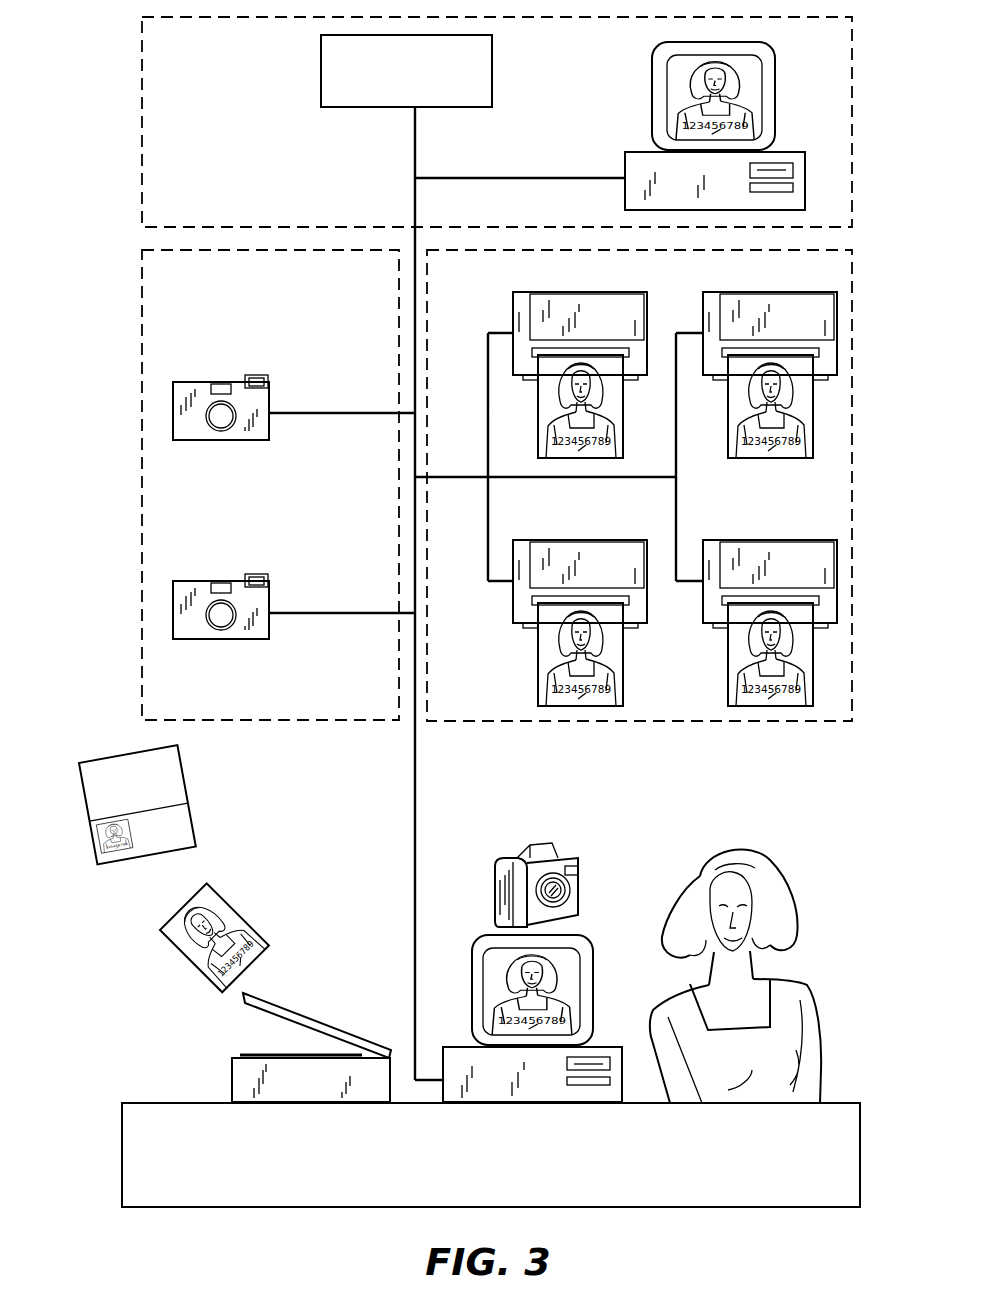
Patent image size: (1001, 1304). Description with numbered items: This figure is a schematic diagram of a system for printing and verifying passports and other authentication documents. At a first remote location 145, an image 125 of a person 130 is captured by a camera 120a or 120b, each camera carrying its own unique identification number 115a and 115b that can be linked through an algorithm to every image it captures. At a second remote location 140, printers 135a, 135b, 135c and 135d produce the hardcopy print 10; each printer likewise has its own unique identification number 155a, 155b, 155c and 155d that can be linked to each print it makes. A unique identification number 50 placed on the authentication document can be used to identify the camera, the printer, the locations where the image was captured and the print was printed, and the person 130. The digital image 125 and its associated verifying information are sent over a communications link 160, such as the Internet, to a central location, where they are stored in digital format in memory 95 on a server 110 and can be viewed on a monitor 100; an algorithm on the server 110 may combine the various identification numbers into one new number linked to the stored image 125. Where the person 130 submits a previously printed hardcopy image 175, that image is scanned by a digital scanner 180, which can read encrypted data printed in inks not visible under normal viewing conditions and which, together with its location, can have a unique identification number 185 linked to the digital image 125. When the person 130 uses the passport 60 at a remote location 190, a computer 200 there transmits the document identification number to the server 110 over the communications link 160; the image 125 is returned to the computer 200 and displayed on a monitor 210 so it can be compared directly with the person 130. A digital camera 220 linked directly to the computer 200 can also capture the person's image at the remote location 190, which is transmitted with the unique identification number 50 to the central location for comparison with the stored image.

The hardcopy print 10 is at (538, 438).
The unique identification number 50 is at (575, 1018).
The passport 60 is at (198, 817).
The memory 95 is at (321, 76).
The monitor 100 is at (652, 65).
The server 110 is at (625, 167).
The unique identification number of camera 115a is at (186, 440).
The unique identification number of camera 115b is at (186, 640).
The camera 120a is at (269, 392).
The camera 120b is at (269, 590).
The image 125 is at (677, 103).
The person 130 is at (812, 985).
The printer 135a is at (548, 291).
The printer 135b is at (738, 291).
The printer 135c is at (548, 539).
The printer 135d is at (738, 539).
The remote location 140 is at (637, 733).
The first remote location 145 is at (234, 731).
The unique identification number of printer 155a is at (627, 294).
The unique identification number of printer 155b is at (817, 294).
The unique identification number of printer 155c is at (627, 542).
The unique identification number of printer 155d is at (817, 542).
The communications link 160 is at (682, 10).
The hardcopy image 175 is at (236, 906).
The digital scanner 180 is at (332, 1027).
The unique identification number of scanner 185 is at (363, 1077).
The remote location 190 is at (680, 1208).
The computer 200 is at (463, 1045).
The monitor 210 is at (593, 947).
The digital camera 220 is at (519, 846).